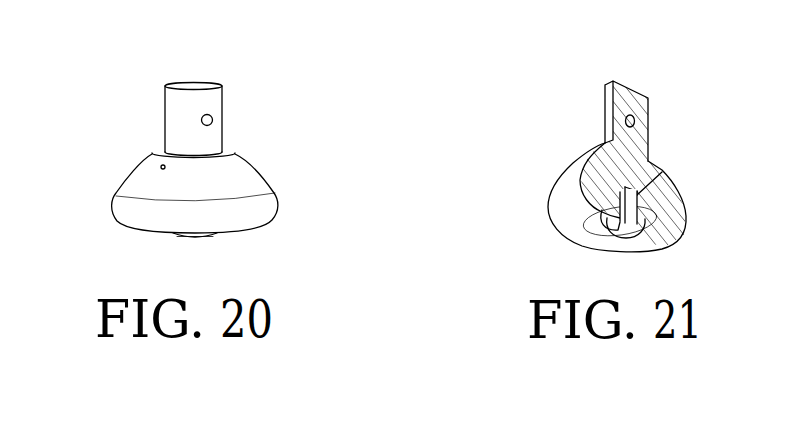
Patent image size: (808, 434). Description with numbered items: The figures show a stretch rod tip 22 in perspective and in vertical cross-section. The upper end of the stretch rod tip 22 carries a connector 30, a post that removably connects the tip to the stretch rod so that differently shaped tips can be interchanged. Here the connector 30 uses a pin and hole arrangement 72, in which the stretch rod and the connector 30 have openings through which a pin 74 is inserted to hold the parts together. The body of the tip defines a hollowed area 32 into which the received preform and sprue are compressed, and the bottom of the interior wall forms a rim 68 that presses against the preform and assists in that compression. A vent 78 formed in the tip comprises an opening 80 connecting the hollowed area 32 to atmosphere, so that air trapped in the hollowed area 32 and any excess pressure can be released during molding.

In FIG. 20, the stretch rod tip 22 is at (295, 154).
In FIG. 21, the stretch rod tip 22 is at (551, 141).
In FIG. 20, the connector 30 is at (180, 122).
In FIG. 21, the hollowed area 32 is at (641, 239).
In FIG. 21, the rim 68 is at (613, 228).
In FIG. 20, the pin and hole arrangement 72 is at (191, 96).
In FIG. 21, the pin and hole arrangement 72 is at (635, 120).
In FIG. 20, the pin 74 is at (213, 121).
In FIG. 20, the vent 78 is at (161, 164).
In FIG. 21, the vent 78 is at (642, 188).
In FIG. 21, the opening 80 is at (650, 192).